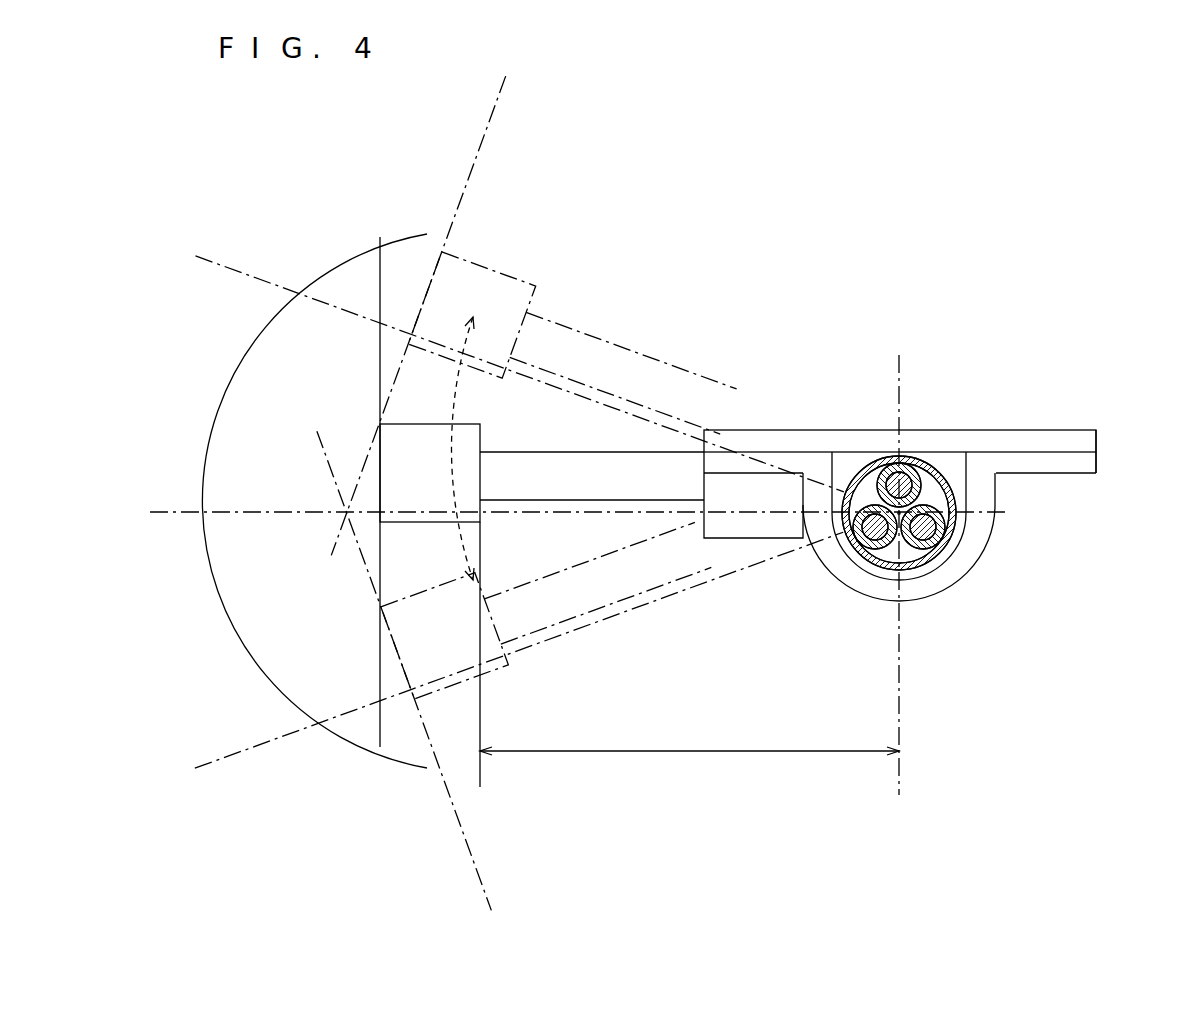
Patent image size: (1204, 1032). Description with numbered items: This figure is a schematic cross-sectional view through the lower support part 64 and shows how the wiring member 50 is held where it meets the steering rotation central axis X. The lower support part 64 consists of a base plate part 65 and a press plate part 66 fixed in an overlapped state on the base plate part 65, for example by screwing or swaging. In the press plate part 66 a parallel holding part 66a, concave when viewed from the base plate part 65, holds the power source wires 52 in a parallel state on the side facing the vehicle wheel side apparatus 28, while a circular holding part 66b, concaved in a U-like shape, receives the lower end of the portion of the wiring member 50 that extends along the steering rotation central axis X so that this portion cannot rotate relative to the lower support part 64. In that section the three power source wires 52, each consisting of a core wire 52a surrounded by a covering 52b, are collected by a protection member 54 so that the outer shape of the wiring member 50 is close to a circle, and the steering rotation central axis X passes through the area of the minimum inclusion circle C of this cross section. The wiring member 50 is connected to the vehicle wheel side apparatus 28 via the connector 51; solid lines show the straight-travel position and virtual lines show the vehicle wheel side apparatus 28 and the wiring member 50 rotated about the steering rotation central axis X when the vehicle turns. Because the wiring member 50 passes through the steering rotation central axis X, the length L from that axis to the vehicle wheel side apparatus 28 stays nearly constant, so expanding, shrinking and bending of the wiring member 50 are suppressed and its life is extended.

The vehicle wheel side apparatus 28 is at (475, 157).
The connector 51 is at (513, 281).
The wiring member 50 is at (912, 462).
The power source wire 52 is at (873, 487).
The core wire 52a is at (932, 536).
The covering 52b is at (925, 553).
The protection member 54 is at (940, 472).
The lower support part 64 is at (1143, 423).
The base plate part 65 is at (1097, 440).
The press plate part 66 is at (1097, 462).
The parallel holding part 66a is at (740, 539).
The circular holding part 66b is at (912, 598).
The minimum inclusion circle C is at (882, 492).
The steering rotation central axis X is at (922, 490).
The length L is at (689, 654).